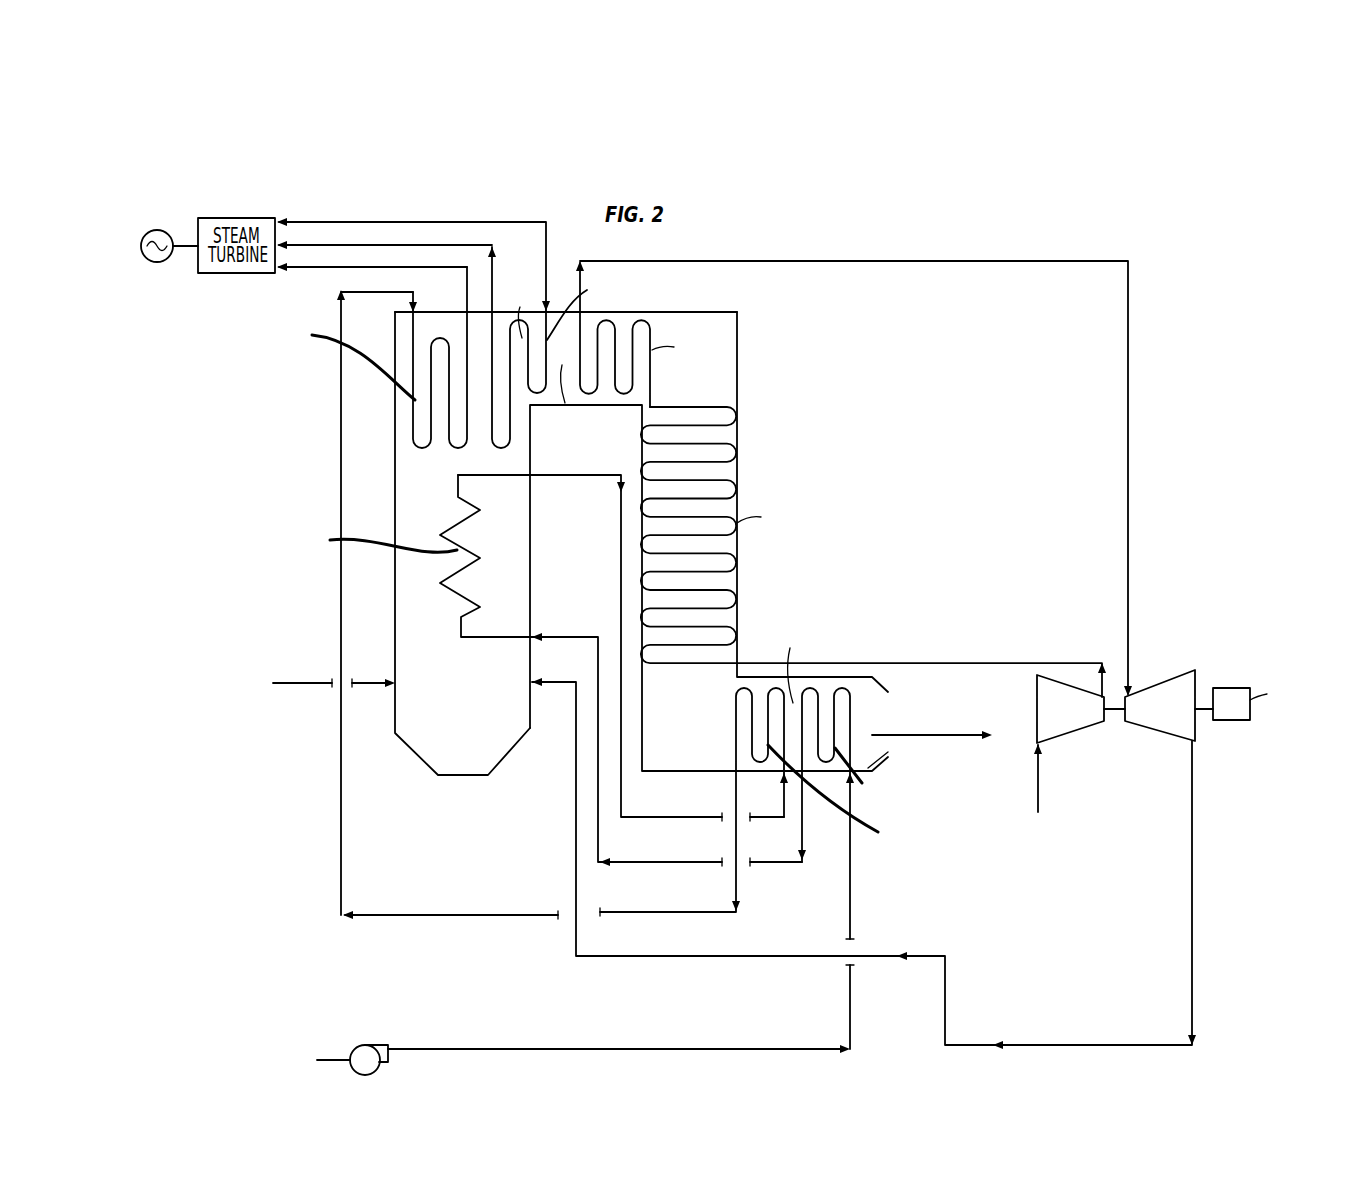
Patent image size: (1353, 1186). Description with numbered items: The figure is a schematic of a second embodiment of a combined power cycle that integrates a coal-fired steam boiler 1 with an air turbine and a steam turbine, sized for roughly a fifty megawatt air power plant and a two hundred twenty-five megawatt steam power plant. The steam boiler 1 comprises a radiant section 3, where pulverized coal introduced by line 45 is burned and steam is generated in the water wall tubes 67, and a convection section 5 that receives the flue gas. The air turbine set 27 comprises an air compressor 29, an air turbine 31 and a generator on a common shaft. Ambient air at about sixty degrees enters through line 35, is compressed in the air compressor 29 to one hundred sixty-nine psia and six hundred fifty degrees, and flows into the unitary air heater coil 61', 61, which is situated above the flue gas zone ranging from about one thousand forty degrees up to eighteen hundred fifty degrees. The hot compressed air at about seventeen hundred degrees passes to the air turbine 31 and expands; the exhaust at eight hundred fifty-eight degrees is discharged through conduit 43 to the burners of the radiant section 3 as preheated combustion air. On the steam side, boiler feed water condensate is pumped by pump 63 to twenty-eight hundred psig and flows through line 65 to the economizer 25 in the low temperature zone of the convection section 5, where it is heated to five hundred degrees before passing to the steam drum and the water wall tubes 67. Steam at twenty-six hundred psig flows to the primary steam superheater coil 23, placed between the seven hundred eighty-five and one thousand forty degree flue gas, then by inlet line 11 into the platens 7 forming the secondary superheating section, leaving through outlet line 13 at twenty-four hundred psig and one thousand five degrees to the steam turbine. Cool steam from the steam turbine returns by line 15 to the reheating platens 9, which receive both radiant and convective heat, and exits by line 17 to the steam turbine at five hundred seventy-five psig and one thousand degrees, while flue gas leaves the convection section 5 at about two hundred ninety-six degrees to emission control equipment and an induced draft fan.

The steam boiler 1 is at (334, 630).
The radiant section 3 is at (395, 632).
The convection section 5 is at (743, 527).
The platens for superheating steam 7 is at (417, 447).
The platens for reheating steam 9 is at (492, 447).
The inlet line 11 is at (343, 337).
The outlet line 13 is at (465, 298).
The inlet line 15 is at (548, 233).
The outlet line 17 is at (493, 262).
The primary steam superheater coil 23 is at (659, 771).
The economizer 25 is at (855, 868).
The air turbine set 27 is at (1248, 680).
The air compressor 29 is at (1037, 710).
The air turbine 31 is at (1163, 680).
The air line 35 is at (1038, 805).
The exhaust conduit 43 is at (660, 956).
The coal line 45 is at (313, 684).
The air heater coil 61 is at (854, 466).
The air heater coil 61' is at (873, 552).
The pump 63 is at (355, 1047).
The line 65 is at (672, 1050).
The water wall tubes 67 is at (487, 639).